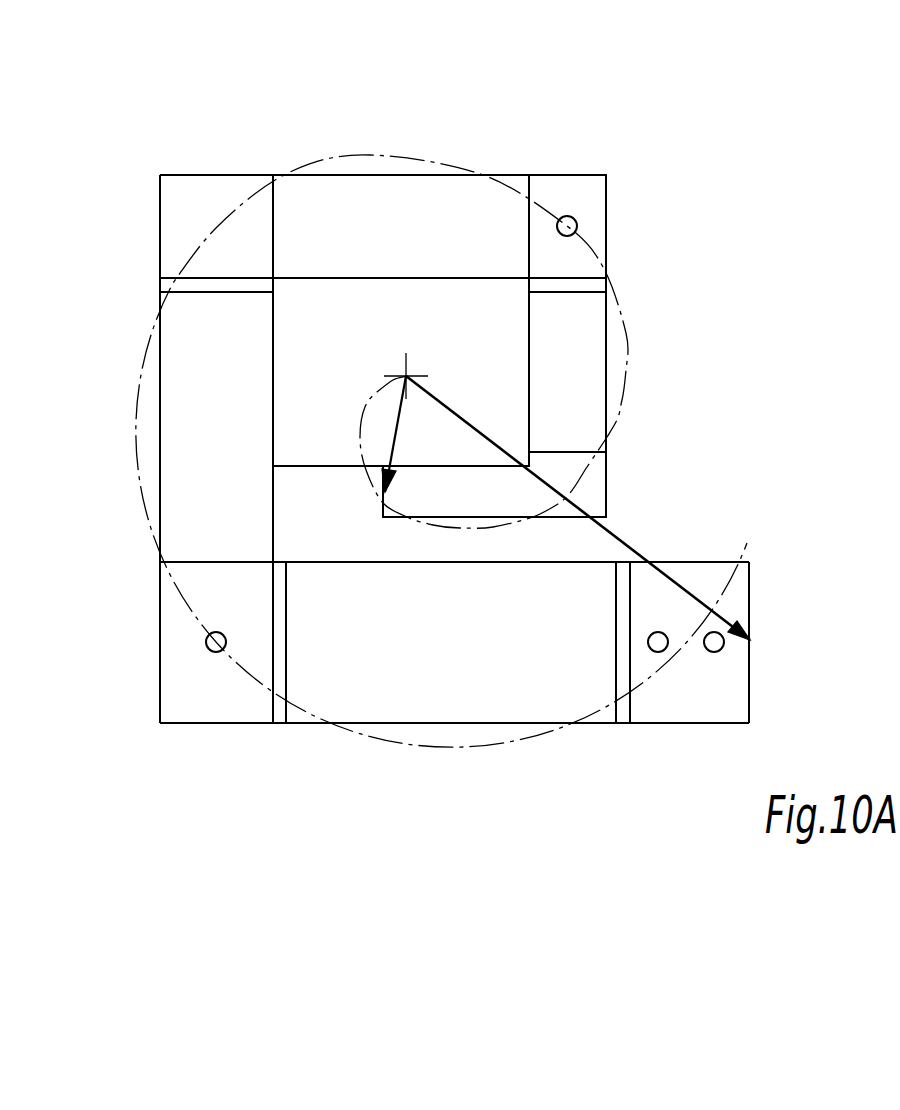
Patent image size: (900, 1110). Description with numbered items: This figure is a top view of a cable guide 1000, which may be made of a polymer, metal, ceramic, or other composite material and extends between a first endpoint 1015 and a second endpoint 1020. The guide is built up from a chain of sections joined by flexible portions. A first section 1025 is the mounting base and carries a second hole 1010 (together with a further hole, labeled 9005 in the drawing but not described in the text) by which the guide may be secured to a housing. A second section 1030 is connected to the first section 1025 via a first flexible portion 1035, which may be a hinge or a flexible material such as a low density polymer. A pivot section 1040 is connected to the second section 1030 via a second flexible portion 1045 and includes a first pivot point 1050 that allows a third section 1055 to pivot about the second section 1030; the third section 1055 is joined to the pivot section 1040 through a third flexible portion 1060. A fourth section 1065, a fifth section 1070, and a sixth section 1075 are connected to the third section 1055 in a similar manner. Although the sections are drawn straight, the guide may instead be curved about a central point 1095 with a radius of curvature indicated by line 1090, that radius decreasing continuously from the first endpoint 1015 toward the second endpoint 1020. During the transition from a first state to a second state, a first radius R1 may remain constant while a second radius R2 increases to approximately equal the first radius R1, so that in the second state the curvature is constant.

The cable guide 1000 is at (205, 78).
The fourth section 1065 is at (415, 225).
The line 1090 is at (607, 282).
The fifth section 1070 is at (573, 378).
The central point 1095 is at (413, 372).
The second radius R2 is at (393, 422).
The first radius R1 is at (618, 538).
The second endpoint 1020 is at (383, 497).
The sixth section 1075 is at (451, 500).
The third section 1055 is at (177, 423).
The third flexible portion 1060 is at (160, 575).
The pivot section 1040 is at (182, 677).
The first pivot point 1050 is at (230, 637).
The second flexible portion 1045 is at (283, 722).
The second section 1030 is at (440, 677).
The first flexible portion 1035 is at (623, 608).
The aperture 9005 is at (648, 642).
The second hole 1010 is at (717, 652).
The first endpoint 1015 is at (752, 640).
The first section 1025 is at (688, 716).